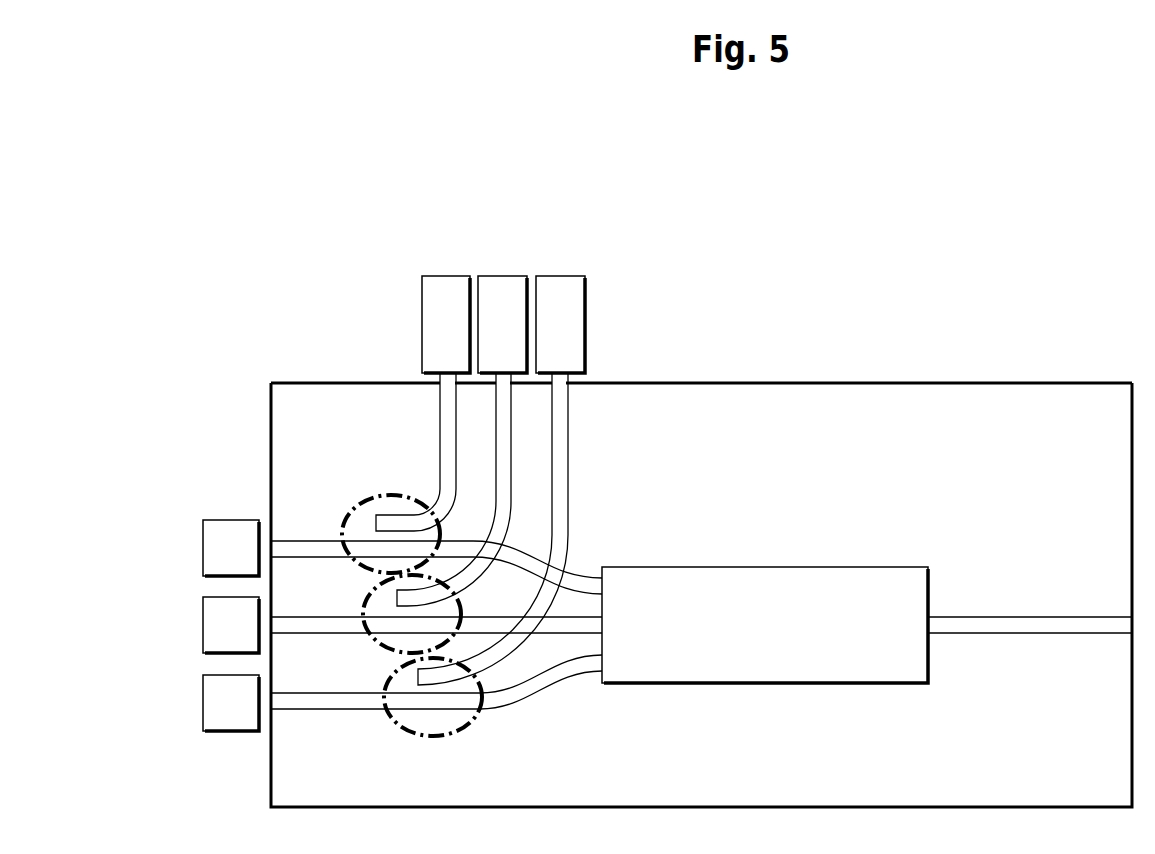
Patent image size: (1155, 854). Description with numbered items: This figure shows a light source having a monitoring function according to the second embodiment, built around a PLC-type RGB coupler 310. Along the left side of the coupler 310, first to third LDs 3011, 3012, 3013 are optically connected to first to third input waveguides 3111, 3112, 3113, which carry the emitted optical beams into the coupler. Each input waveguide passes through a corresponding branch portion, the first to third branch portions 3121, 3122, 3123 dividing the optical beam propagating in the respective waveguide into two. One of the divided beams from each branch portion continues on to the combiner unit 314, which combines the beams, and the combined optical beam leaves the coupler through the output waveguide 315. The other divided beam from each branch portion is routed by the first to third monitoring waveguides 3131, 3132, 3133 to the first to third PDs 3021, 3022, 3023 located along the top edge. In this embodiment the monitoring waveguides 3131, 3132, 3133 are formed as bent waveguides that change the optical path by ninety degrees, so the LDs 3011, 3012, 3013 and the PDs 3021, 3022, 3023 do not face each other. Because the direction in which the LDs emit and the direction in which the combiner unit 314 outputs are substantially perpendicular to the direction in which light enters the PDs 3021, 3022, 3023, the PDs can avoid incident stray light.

The PLC-type RGB coupler 310 is at (1078, 383).
The first LD 3011 is at (203, 551).
The second LD 3012 is at (203, 627).
The third LD 3013 is at (203, 703).
The first PD 3021 is at (438, 276).
The second PD 3022 is at (494, 276).
The third PD 3023 is at (552, 276).
The first input waveguide 3111 is at (313, 540).
The second input waveguide 3112 is at (313, 616).
The third input waveguide 3113 is at (305, 710).
The first branch portion 3121 is at (388, 494).
The second branch portion 3122 is at (388, 652).
The third branch portion 3123 is at (423, 737).
The first monitoring waveguide 3131 is at (440, 402).
The second monitoring waveguide 3132 is at (510, 408).
The third monitoring waveguide 3133 is at (567, 453).
The combiner unit 314 is at (888, 567).
The output waveguide 315 is at (1025, 617).